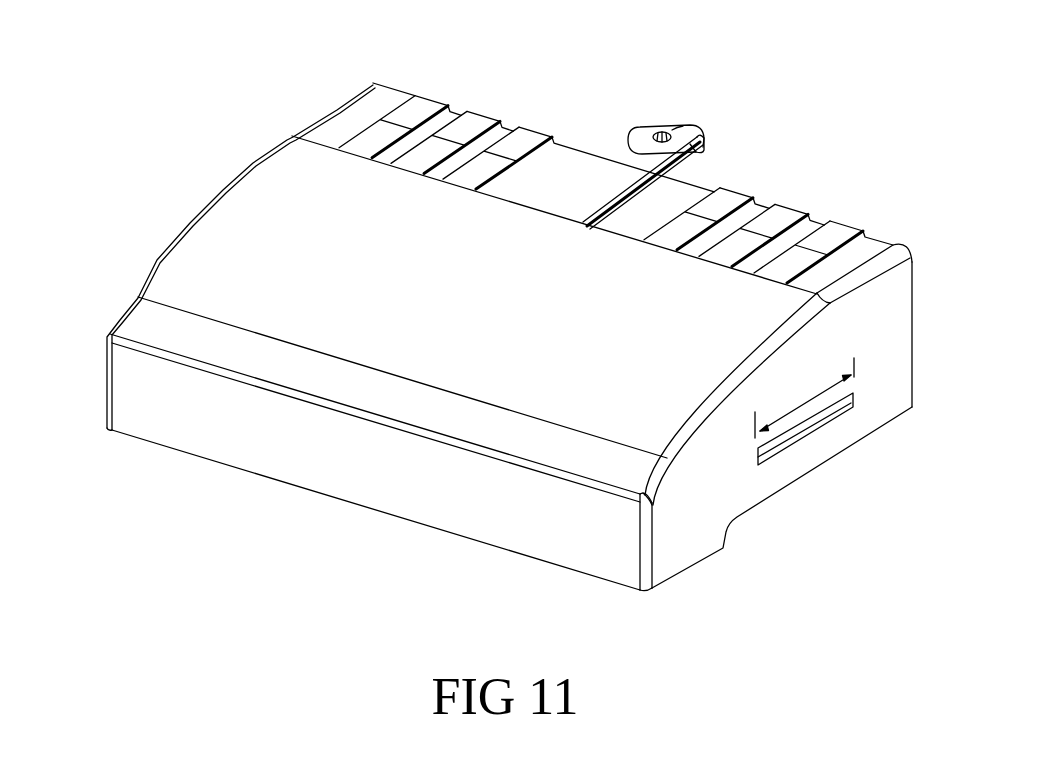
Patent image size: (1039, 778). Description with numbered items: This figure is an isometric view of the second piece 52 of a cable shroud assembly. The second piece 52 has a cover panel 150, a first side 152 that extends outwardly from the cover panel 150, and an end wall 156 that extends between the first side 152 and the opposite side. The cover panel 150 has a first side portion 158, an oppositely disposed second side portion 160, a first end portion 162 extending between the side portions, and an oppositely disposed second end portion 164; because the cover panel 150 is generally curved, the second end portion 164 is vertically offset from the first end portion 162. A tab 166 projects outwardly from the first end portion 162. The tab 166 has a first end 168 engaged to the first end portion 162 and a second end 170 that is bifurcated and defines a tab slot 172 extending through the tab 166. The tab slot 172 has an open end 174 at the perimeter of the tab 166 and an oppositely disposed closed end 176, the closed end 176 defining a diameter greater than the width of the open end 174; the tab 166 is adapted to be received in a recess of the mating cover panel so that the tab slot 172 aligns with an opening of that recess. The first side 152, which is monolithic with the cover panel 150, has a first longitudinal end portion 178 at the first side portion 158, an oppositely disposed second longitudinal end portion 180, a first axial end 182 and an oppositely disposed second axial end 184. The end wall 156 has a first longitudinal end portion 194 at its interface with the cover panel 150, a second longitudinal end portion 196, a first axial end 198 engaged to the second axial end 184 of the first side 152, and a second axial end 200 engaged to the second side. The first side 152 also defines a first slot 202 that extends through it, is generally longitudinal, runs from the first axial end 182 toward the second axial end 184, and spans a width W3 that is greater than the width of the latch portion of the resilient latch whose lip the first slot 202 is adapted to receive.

The second piece 52 is at (218, 132).
The cover panel 150 is at (298, 255).
The first side 152 is at (760, 480).
The end wall 156 is at (300, 468).
The first side portion 158 is at (748, 340).
The second side portion 160 is at (180, 262).
The first end portion 162 is at (682, 190).
The second end portion 164 is at (312, 378).
The tab 166 is at (652, 115).
The first end 168 is at (587, 180).
The second end 170 is at (693, 130).
The tab slot 172 is at (690, 127).
The open end 174 is at (680, 127).
The closed end 176 is at (630, 130).
The first longitudinal end portion 178 is at (870, 290).
The second longitudinal end portion 180 is at (867, 427).
The first axial end 182 is at (900, 342).
The second axial end 184 is at (662, 543).
The first longitudinal end portion 194 is at (432, 450).
The second longitudinal end portion 196 is at (337, 490).
The first axial end 198 is at (632, 545).
The second axial end 200 is at (120, 390).
The first slot 202 is at (810, 437).
The width of first slot W3 is at (804, 398).